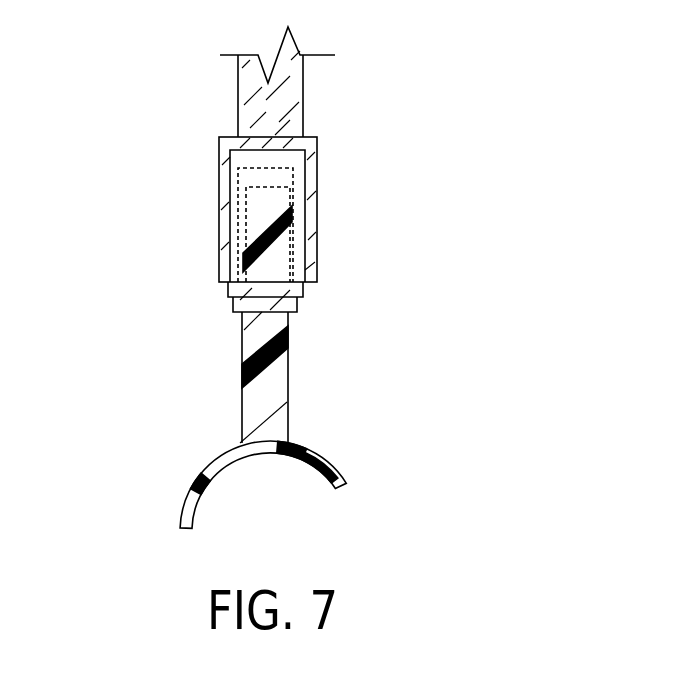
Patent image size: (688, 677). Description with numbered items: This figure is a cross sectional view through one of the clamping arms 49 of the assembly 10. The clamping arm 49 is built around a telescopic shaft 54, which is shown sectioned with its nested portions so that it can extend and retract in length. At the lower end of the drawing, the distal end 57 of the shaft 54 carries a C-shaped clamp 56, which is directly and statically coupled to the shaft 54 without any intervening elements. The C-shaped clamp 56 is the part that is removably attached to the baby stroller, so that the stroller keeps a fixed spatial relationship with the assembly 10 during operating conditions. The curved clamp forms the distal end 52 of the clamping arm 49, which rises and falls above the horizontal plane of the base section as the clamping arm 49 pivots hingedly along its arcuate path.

The assembly 10 is at (563, 108).
The clamping arm 49 is at (288, 383).
The distal end of clamping arm 52 is at (178, 526).
The telescopic shaft 54 is at (317, 223).
The C-shaped clamp 56 is at (184, 493).
The distal end of shaft 57 is at (288, 433).